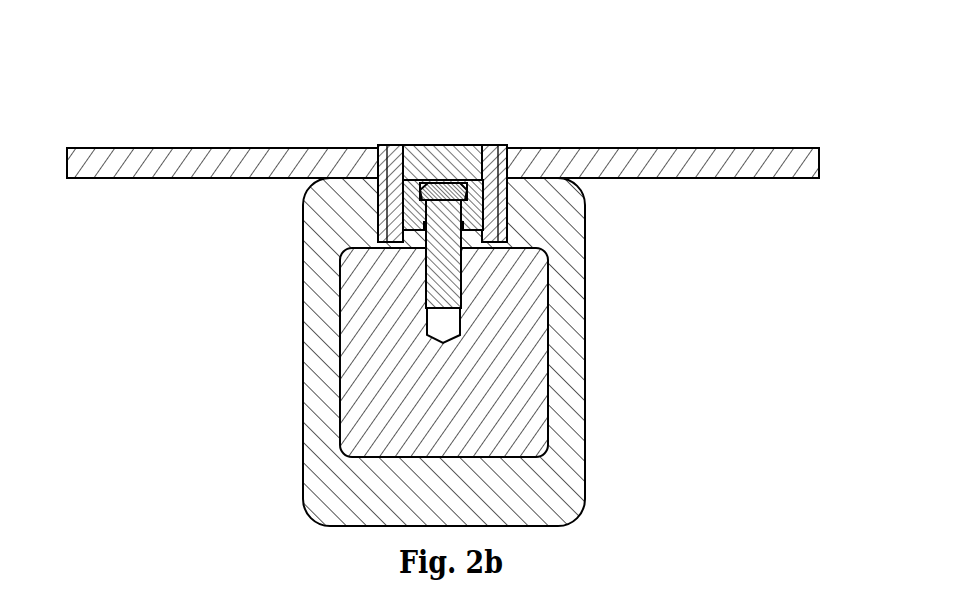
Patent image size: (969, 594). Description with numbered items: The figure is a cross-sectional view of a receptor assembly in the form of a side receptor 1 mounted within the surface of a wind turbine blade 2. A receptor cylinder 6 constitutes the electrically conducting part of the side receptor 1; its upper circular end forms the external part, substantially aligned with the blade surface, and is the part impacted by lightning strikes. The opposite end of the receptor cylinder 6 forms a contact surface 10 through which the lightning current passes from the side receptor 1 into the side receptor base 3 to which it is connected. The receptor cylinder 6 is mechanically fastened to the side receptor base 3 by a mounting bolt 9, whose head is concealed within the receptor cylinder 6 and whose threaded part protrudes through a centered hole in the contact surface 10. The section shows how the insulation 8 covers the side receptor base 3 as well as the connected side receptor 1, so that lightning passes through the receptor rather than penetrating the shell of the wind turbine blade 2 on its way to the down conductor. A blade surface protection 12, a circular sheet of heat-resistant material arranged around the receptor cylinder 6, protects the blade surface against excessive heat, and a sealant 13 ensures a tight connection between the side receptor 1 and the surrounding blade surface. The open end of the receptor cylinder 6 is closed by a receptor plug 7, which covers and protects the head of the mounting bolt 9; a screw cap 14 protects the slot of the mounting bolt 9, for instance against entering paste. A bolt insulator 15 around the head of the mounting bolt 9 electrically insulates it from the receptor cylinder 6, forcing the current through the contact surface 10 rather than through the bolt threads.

The side receptor 1 is at (690, 392).
The wind turbine blade 2 is at (88, 172).
The side receptor base 3 is at (522, 423).
The receptor cylinder 6 is at (390, 218).
The receptor plug 7 is at (442, 144).
The insulation 8 is at (325, 492).
The mounting bolt 9 is at (443, 300).
The contact surface 10 is at (410, 258).
The blade surface protection 12 is at (550, 147).
The sealant 13 is at (372, 143).
The screw cap 14 is at (447, 190).
The bolt insulator 15 is at (483, 213).